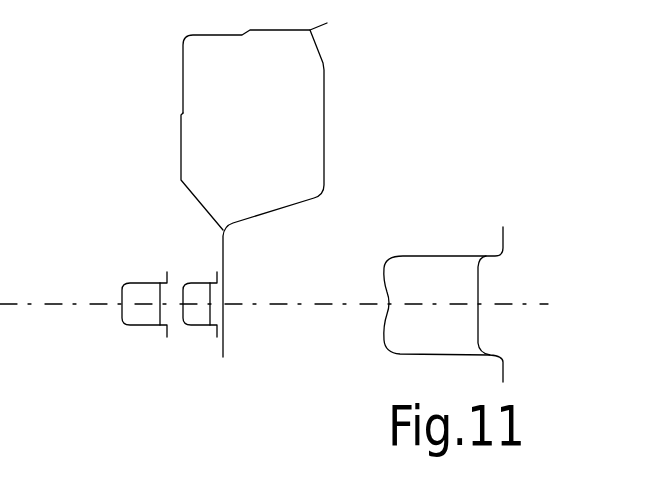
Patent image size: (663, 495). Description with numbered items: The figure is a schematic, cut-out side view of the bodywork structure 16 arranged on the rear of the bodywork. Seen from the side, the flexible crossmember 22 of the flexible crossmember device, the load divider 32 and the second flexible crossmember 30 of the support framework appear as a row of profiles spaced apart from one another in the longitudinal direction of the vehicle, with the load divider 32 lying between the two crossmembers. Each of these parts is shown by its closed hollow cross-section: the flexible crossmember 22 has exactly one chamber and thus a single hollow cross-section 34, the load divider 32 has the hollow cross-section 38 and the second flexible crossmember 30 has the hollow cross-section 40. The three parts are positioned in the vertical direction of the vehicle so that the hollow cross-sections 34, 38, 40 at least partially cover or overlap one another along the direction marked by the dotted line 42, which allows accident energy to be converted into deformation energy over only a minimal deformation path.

The bodywork structure 16 is at (128, 120).
The flexible crossmember 22 is at (143, 327).
The second flexible crossmember 30 is at (442, 255).
The load divider 32 is at (195, 327).
The hollow cross-section 34 is at (133, 318).
The hollow cross-section 38 is at (203, 293).
The hollow cross-section 40 is at (475, 292).
The dotted line 42 is at (302, 305).